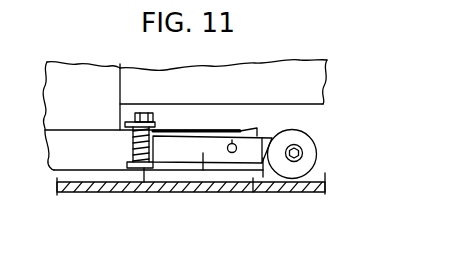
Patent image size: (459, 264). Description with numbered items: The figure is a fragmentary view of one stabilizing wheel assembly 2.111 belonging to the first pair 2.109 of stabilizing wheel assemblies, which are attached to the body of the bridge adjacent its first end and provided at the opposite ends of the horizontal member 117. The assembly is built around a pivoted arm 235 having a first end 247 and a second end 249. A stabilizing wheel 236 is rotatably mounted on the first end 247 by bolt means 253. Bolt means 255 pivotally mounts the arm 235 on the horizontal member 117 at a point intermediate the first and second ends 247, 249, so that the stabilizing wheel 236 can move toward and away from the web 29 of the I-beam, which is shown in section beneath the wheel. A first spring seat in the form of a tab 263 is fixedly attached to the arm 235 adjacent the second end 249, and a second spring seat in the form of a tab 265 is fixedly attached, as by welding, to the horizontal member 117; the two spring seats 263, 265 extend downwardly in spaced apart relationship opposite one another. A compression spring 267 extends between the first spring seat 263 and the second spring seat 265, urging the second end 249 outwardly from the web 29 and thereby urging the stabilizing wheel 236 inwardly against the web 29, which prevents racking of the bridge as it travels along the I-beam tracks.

The horizontal member 117 is at (53, 140).
The second end of arm 249 is at (158, 138).
The arm 235 is at (205, 150).
The bolt means 255 is at (234, 145).
The stabilizing wheel 236 is at (311, 160).
The bolt means 253 is at (288, 150).
The web 29 is at (80, 193).
The tab (first spring seat) 263 is at (130, 129).
The compression spring 267 is at (132, 148).
The tab (second spring seat) 265 is at (144, 182).
The first end of arm 247 is at (260, 192).
The stabilizing wheel assembly 2.111 is at (322, 125).
The first pair of stabilizing wheel assemblies 2.109 is at (333, 175).